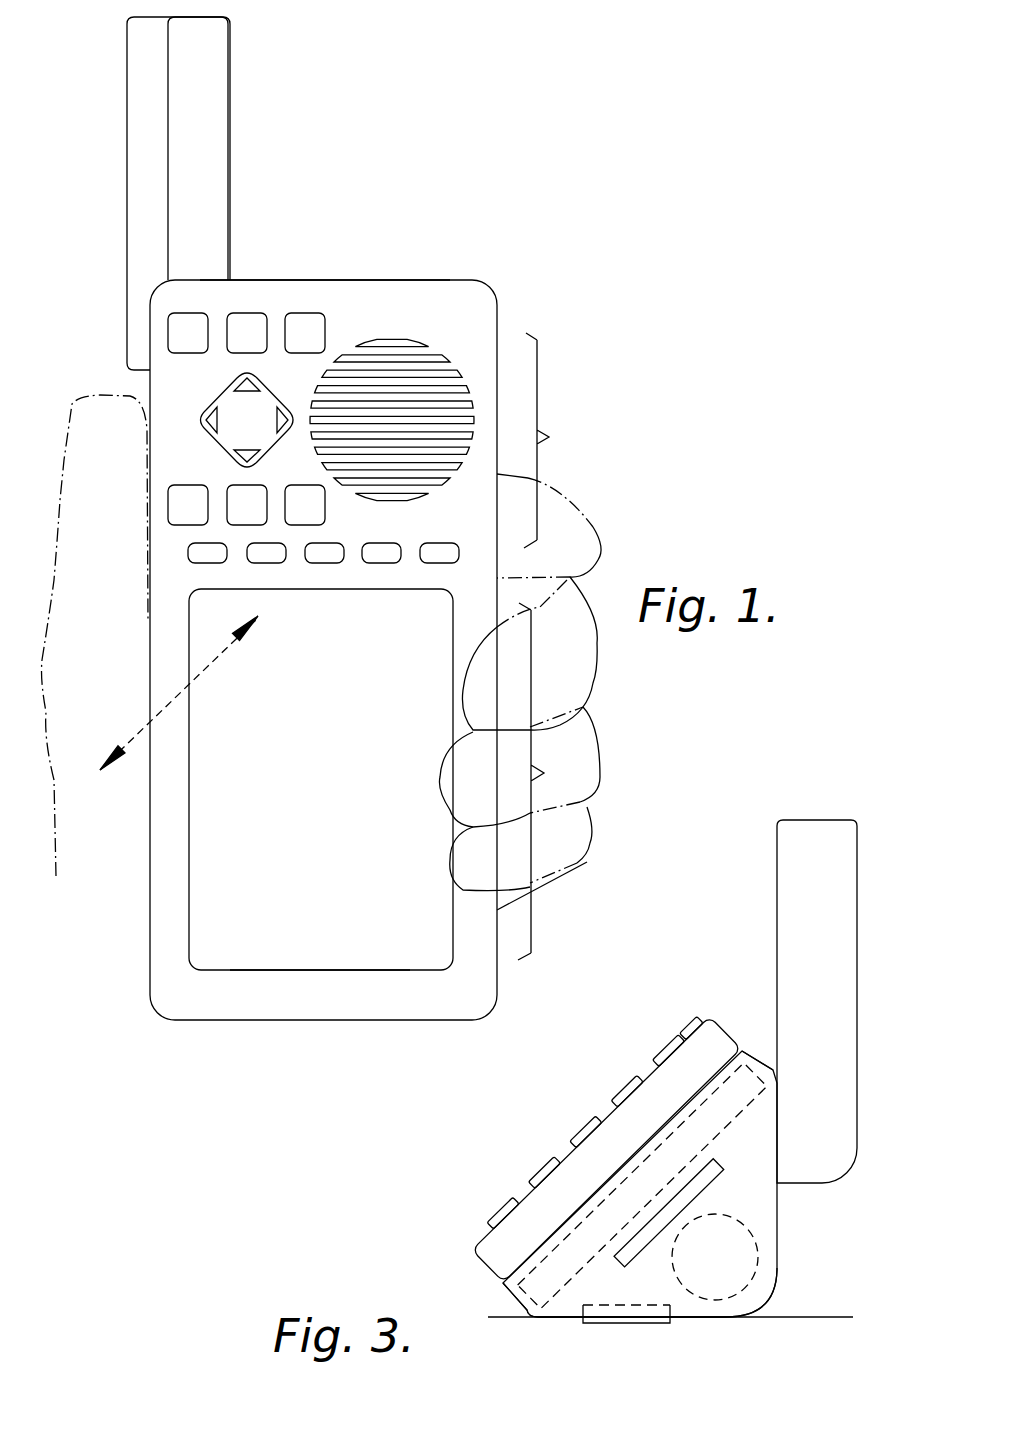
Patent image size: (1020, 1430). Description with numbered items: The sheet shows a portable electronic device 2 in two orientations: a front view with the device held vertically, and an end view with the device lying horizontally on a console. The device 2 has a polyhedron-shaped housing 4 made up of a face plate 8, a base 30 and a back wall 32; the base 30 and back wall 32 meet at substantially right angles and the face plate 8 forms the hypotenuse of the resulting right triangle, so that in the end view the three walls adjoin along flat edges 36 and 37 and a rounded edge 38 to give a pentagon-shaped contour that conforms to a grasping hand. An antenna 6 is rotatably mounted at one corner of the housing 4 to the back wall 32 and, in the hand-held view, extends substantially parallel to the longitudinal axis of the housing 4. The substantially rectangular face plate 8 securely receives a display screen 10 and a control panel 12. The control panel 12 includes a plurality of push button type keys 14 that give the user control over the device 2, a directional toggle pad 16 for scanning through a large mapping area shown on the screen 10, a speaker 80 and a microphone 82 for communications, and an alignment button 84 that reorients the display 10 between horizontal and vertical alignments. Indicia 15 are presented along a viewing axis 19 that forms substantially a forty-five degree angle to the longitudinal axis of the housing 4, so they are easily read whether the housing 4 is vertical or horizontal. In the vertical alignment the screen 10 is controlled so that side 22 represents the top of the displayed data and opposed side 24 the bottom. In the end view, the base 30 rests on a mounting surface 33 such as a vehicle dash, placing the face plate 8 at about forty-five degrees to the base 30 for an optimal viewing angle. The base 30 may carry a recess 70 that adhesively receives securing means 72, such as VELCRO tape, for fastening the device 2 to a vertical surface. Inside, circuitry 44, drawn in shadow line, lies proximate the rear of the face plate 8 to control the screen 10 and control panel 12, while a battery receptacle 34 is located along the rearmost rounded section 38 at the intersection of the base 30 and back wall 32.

In FIG. 1, the portable electronic device 2 is at (330, 152).
In FIG. 1, the housing 4 is at (458, 274).
In FIG. 1, the antenna 6 is at (208, 98).
In FIG. 3, the antenna 6 is at (793, 892).
In FIG. 1, the face plate 8 is at (430, 1016).
In FIG. 3, the face plate 8 is at (488, 1234).
In FIG. 1, the display screen 10 is at (519, 768).
In FIG. 1, the control panel 12 is at (549, 455).
In FIG. 1, the push button type keys 14 is at (324, 343).
In FIG. 1, the indicia 15 is at (288, 313).
In FIG. 1, the directional toggle pad 16 is at (273, 393).
In FIG. 1, the viewing axis 19 is at (200, 672).
In FIG. 1, the side 22 is at (340, 590).
In FIG. 1, the opposed side 24 is at (295, 969).
In FIG. 1, the speaker 80 is at (390, 360).
In FIG. 1, the microphone 82 is at (360, 280).
In FIG. 1, the alignment button 84 is at (437, 548).
In FIG. 3, the base 30 is at (555, 1317).
In FIG. 3, the back wall 32 is at (778, 1195).
In FIG. 3, the mounting surface 33 is at (760, 1318).
In FIG. 3, the battery receptacle 34 is at (758, 1250).
In FIG. 3, the flat edge 36 is at (512, 1298).
In FIG. 3, the flat edge 37 is at (753, 1050).
In FIG. 3, the rounded edge 38 is at (763, 1298).
In FIG. 3, the circuitry 44 is at (562, 1290).
In FIG. 3, the recess 70 is at (647, 1303).
In FIG. 3, the securing means 72 is at (650, 1323).